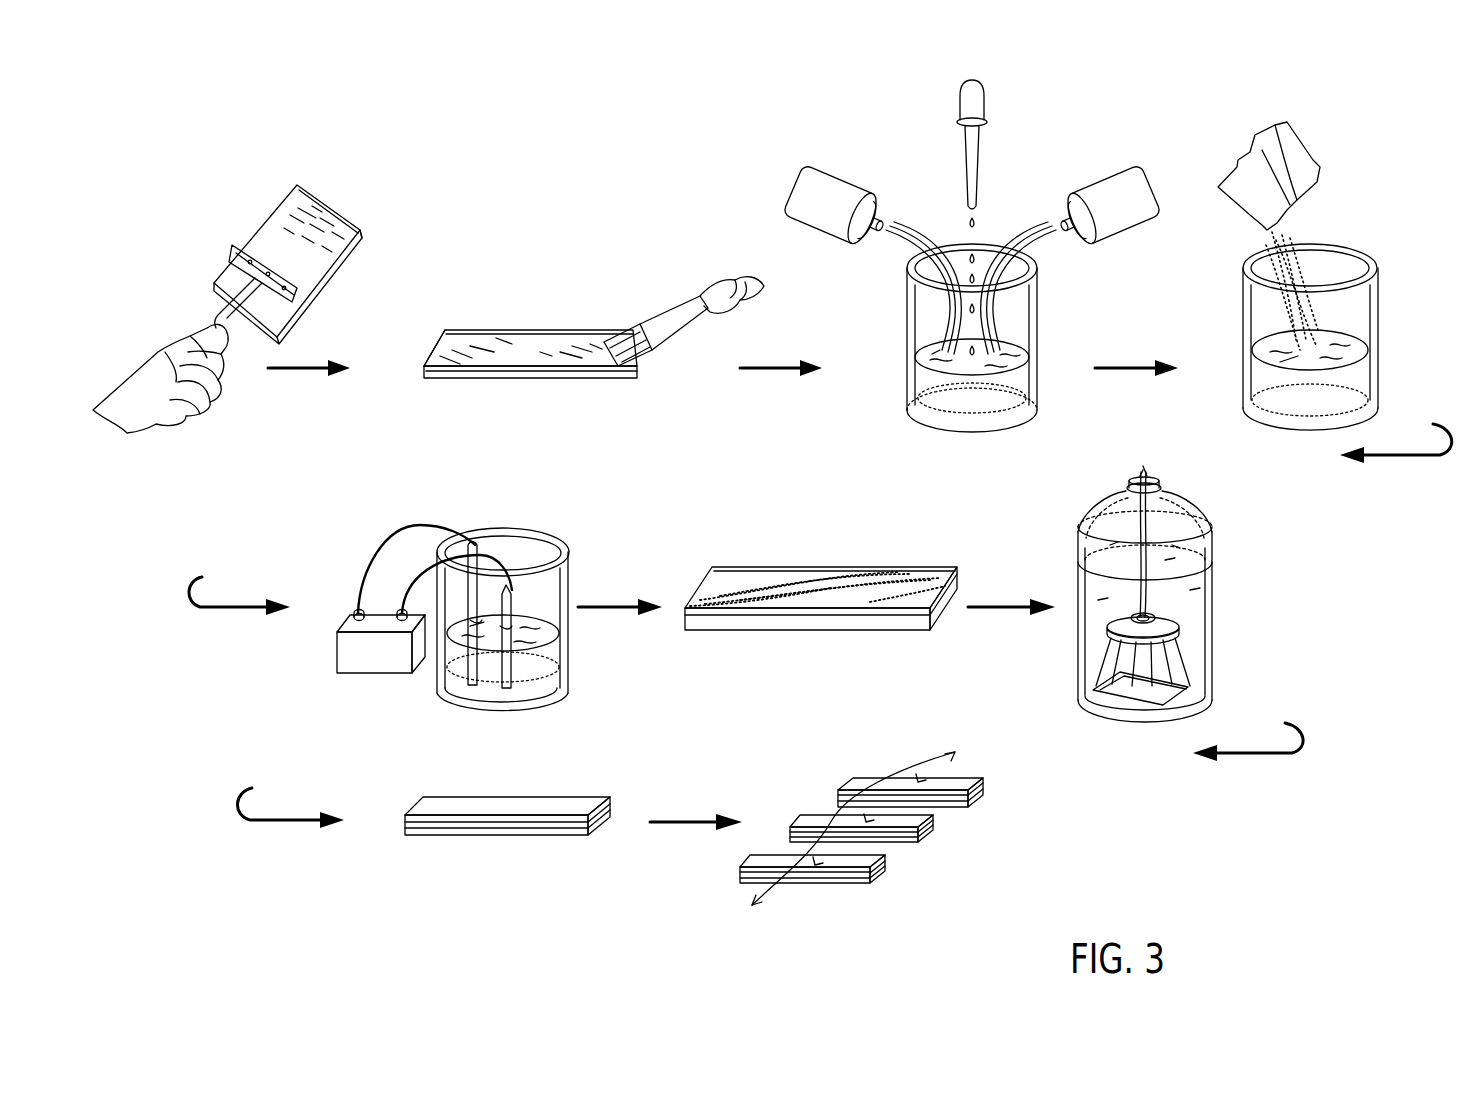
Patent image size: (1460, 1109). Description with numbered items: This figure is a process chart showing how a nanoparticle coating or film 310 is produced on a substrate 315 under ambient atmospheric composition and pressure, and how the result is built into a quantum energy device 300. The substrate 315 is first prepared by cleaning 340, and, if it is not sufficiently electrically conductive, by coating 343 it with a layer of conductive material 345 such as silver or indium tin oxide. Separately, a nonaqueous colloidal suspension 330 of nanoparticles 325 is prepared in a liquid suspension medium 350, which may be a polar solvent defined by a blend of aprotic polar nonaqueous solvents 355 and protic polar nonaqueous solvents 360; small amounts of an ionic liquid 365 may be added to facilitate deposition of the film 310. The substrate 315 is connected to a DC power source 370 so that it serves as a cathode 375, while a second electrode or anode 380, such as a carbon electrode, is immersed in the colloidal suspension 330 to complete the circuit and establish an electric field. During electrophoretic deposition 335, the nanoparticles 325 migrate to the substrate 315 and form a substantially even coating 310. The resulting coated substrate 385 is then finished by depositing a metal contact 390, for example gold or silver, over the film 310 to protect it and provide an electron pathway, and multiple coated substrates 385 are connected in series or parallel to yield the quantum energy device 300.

The quantum energy device 300 is at (903, 890).
The nanoparticle coating or film 310 is at (960, 578).
The substrate 315 is at (366, 250).
The nanoparticles 325 is at (1292, 228).
The nonaqueous colloidal suspension 330 is at (1246, 412).
The electrophoretic deposition 335 is at (296, 707).
The cleaning 340 is at (142, 242).
The coating with conductive material 343 is at (555, 408).
The layer of conductive material 345 is at (540, 340).
The liquid suspension medium 350 is at (912, 400).
The aprotic polar nonaqueous solvents 355 is at (905, 245).
The protic polar nonaqueous solvents 360 is at (1040, 246).
The ionic liquid 365 is at (990, 218).
The DC power source 370 is at (396, 666).
The cathode 375 is at (522, 593).
The second electrode or anode 380 is at (456, 690).
The coated substrate 385 is at (455, 900).
The metal contact 390 is at (598, 797).